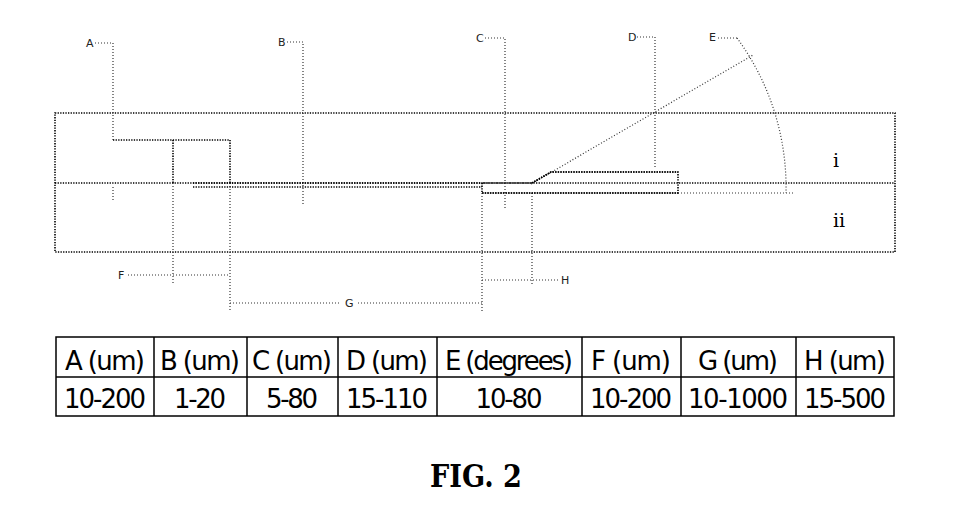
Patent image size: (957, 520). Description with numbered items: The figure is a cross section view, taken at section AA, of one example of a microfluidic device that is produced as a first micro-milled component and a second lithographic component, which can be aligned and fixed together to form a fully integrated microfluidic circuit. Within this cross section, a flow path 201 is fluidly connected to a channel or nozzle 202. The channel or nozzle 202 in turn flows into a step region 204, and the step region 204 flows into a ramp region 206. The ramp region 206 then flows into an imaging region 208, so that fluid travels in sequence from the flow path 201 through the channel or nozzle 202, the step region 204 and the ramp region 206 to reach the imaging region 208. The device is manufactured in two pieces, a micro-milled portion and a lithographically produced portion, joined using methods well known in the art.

The flow path 201 is at (188, 154).
The channel or nozzle 202 is at (351, 185).
The step region 204 is at (512, 200).
The ramp region 206 is at (546, 168).
The imaging region 208 is at (643, 193).